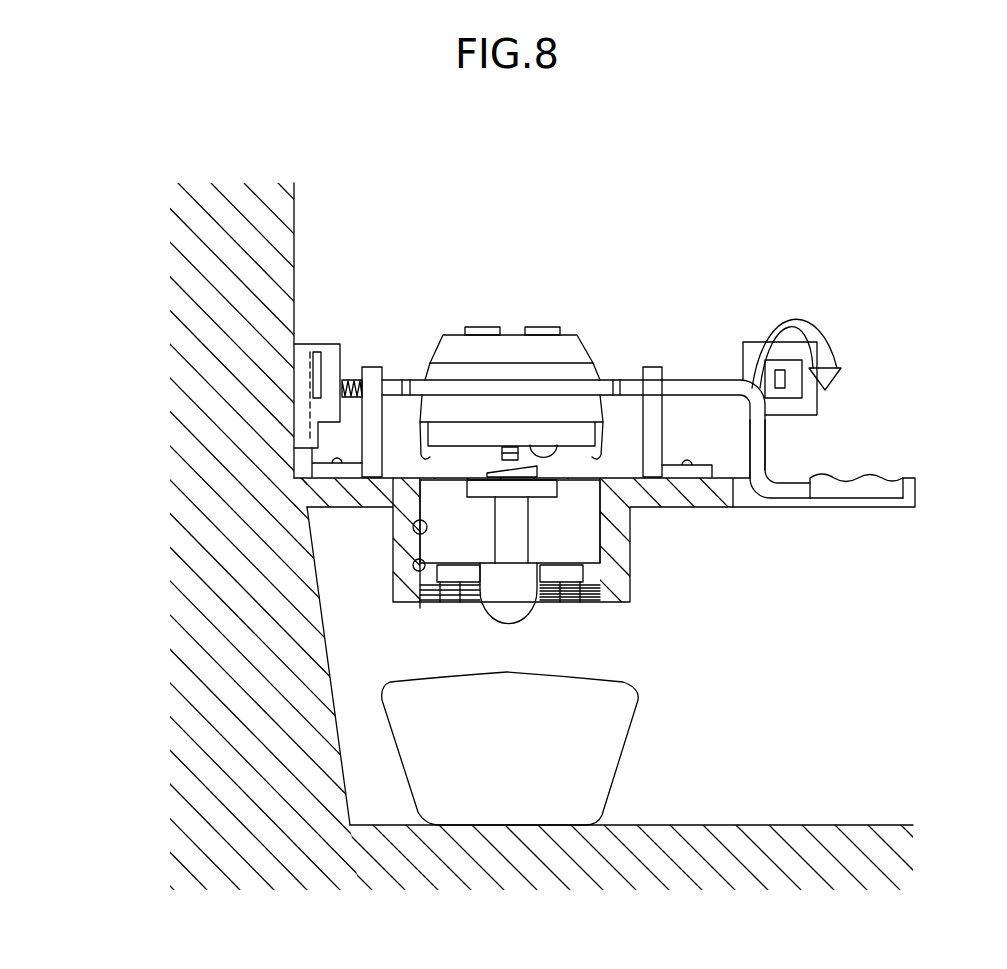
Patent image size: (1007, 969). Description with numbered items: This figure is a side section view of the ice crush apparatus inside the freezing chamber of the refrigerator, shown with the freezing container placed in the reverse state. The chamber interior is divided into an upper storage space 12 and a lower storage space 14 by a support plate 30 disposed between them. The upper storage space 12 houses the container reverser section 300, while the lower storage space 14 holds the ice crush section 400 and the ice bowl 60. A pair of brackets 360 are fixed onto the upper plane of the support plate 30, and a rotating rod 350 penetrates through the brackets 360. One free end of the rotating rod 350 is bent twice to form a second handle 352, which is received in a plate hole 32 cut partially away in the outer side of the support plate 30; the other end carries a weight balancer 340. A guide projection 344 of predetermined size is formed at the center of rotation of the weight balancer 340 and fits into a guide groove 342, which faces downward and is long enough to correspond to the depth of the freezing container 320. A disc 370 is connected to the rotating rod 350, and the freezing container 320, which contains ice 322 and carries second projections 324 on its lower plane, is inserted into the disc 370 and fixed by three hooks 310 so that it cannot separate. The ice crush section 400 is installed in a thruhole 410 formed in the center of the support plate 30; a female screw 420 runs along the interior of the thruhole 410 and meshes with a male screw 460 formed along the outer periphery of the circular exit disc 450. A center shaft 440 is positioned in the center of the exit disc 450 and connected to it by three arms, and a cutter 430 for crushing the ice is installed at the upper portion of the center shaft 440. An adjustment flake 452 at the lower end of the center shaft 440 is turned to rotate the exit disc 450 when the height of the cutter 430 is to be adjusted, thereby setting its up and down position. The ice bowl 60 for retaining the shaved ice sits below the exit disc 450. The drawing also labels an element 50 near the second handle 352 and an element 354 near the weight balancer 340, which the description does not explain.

The upper storage space 12 is at (293, 223).
The lower storage space 14 is at (337, 782).
The support plate 30 is at (702, 498).
The plate hole 32 is at (860, 508).
The latch member 50 is at (785, 390).
The ice bowl 60 is at (622, 748).
The container reverser section 300 is at (606, 278).
The hooks 310 is at (418, 433).
The freezing container 320 is at (458, 437).
The ice 322 is at (521, 447).
The second projections 324 is at (562, 327).
The weight balancer 340 is at (330, 343).
The guide groove 342 is at (312, 423).
The guide projection 344 is at (316, 372).
The rotating rod 350 is at (645, 367).
The second handle 352 is at (843, 483).
The return spring 354 is at (352, 380).
The brackets 360 is at (662, 436).
The disc 370 is at (607, 380).
The ice crush section 400 is at (603, 470).
The thruhole 410 is at (413, 527).
The female screw 420 is at (412, 570).
The cutter 430 is at (557, 480).
The center shaft 440 is at (492, 537).
The exit disc 450 is at (605, 590).
The adjustment flake 452 is at (522, 610).
The male screw 460 is at (430, 603).